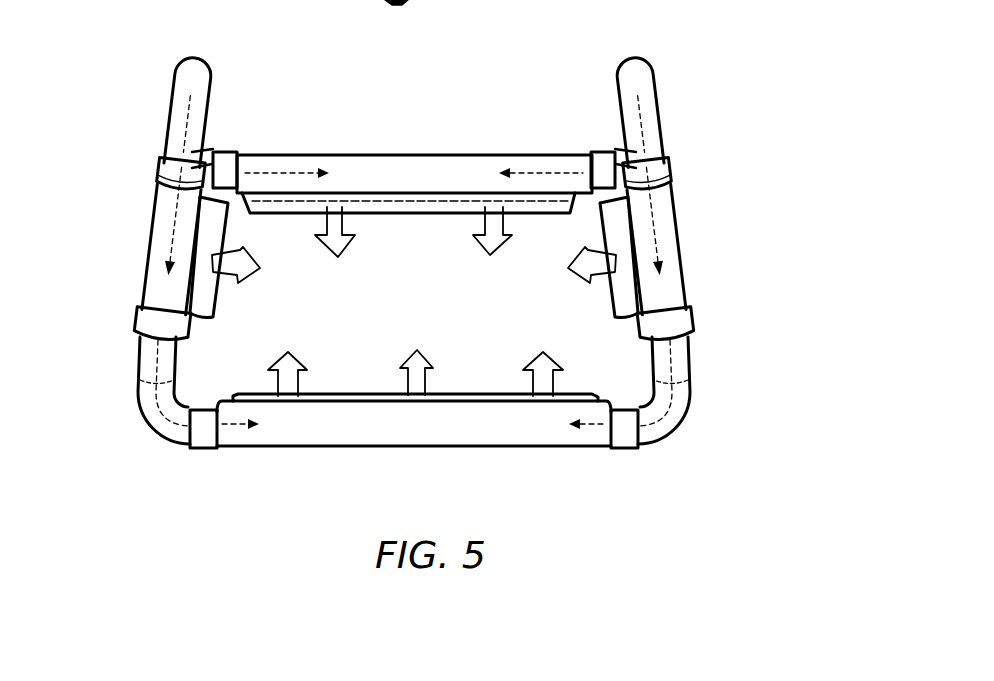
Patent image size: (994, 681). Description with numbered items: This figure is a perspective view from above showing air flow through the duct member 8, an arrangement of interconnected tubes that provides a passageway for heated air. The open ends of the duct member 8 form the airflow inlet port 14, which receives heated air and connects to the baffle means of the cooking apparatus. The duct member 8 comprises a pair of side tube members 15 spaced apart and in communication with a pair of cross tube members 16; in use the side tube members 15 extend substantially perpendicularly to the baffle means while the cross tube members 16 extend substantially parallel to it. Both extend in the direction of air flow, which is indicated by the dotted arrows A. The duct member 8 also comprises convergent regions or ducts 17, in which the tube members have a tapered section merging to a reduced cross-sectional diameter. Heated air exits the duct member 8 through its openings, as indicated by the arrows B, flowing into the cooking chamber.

The duct member 8 is at (468, 101).
The airflow inlet port 14 is at (197, 57).
The side tube members 15 is at (155, 249).
The cross tube members 16 is at (307, 155).
The convergent regions or ducts 17 is at (140, 355).
The heated air flow arrows A is at (641, 126).
The exiting air flow arrows B is at (227, 268).